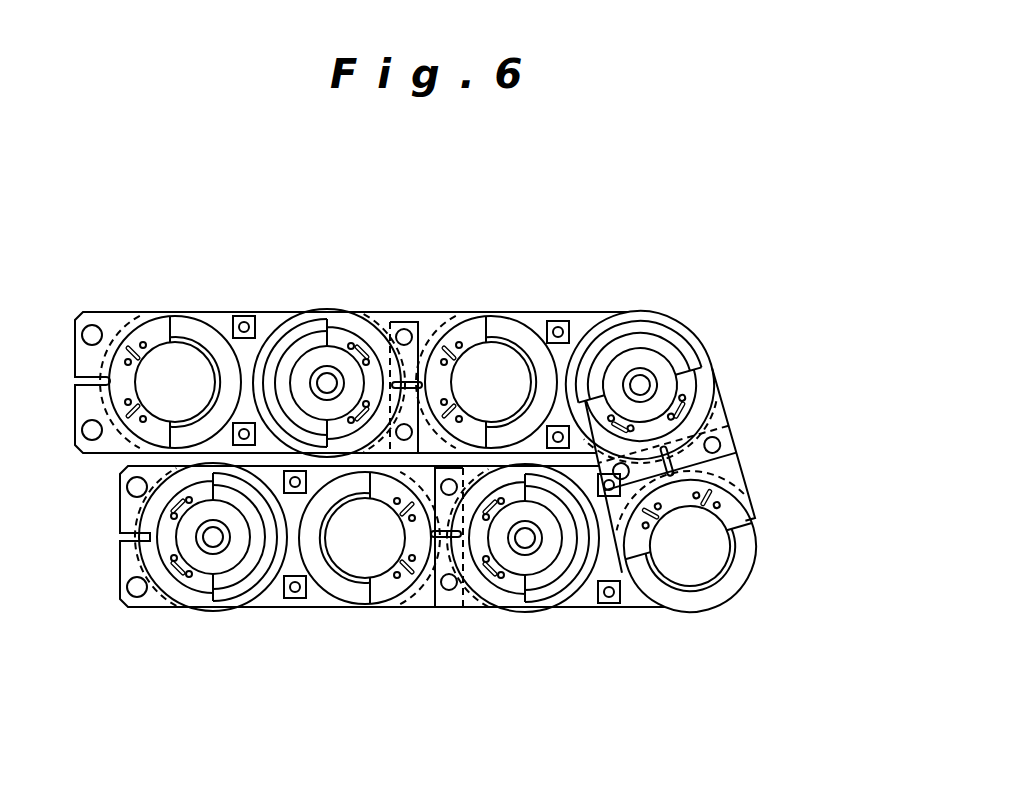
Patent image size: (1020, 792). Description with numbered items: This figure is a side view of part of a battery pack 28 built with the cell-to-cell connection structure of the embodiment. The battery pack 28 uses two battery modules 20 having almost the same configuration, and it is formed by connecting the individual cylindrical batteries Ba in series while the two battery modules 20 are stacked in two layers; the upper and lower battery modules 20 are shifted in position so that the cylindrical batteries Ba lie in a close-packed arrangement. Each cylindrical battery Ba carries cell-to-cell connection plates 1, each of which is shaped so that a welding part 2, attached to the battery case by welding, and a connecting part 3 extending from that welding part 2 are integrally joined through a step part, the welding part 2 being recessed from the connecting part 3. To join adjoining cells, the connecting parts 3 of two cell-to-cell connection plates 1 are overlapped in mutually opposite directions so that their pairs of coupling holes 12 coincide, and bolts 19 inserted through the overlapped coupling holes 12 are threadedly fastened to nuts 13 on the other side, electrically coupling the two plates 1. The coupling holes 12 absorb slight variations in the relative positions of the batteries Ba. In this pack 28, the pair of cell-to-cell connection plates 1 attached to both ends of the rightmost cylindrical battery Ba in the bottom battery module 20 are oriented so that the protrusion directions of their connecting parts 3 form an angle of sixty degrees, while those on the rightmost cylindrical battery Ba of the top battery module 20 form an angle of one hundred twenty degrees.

The cell-to-cell connection plate 1 is at (117, 313).
The welding part 2 is at (473, 337).
The connecting part 3 is at (100, 326).
The cylindrical battery Ba is at (189, 315).
The coupling hole 12 is at (91, 442).
The nut 13 is at (560, 321).
The bolt 19 is at (405, 322).
The battery module 20 is at (728, 364).
The battery pack 28 is at (716, 457).